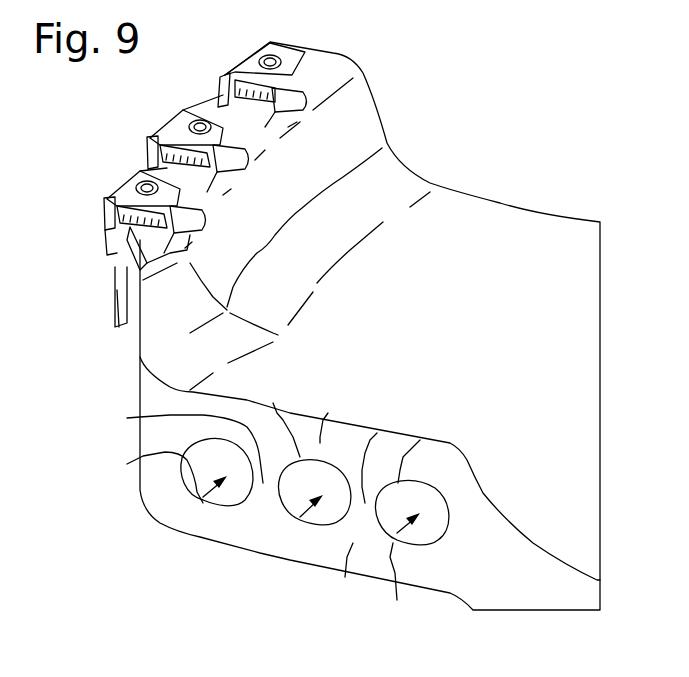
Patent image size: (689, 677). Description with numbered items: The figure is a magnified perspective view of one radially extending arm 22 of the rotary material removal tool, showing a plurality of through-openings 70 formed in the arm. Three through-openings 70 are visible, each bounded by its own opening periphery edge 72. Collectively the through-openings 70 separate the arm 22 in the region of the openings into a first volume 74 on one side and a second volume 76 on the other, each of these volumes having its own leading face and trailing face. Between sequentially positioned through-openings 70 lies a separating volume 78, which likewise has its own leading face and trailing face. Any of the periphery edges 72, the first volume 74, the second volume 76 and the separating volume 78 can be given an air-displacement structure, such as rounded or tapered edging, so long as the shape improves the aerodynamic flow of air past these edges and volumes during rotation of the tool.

The arm 22 is at (462, 287).
The through-opening 70 is at (203, 497).
The opening periphery edge 72 is at (127, 464).
The first volume 74 is at (345, 577).
The second volume 76 is at (328, 413).
The separating volume 78 is at (127, 418).